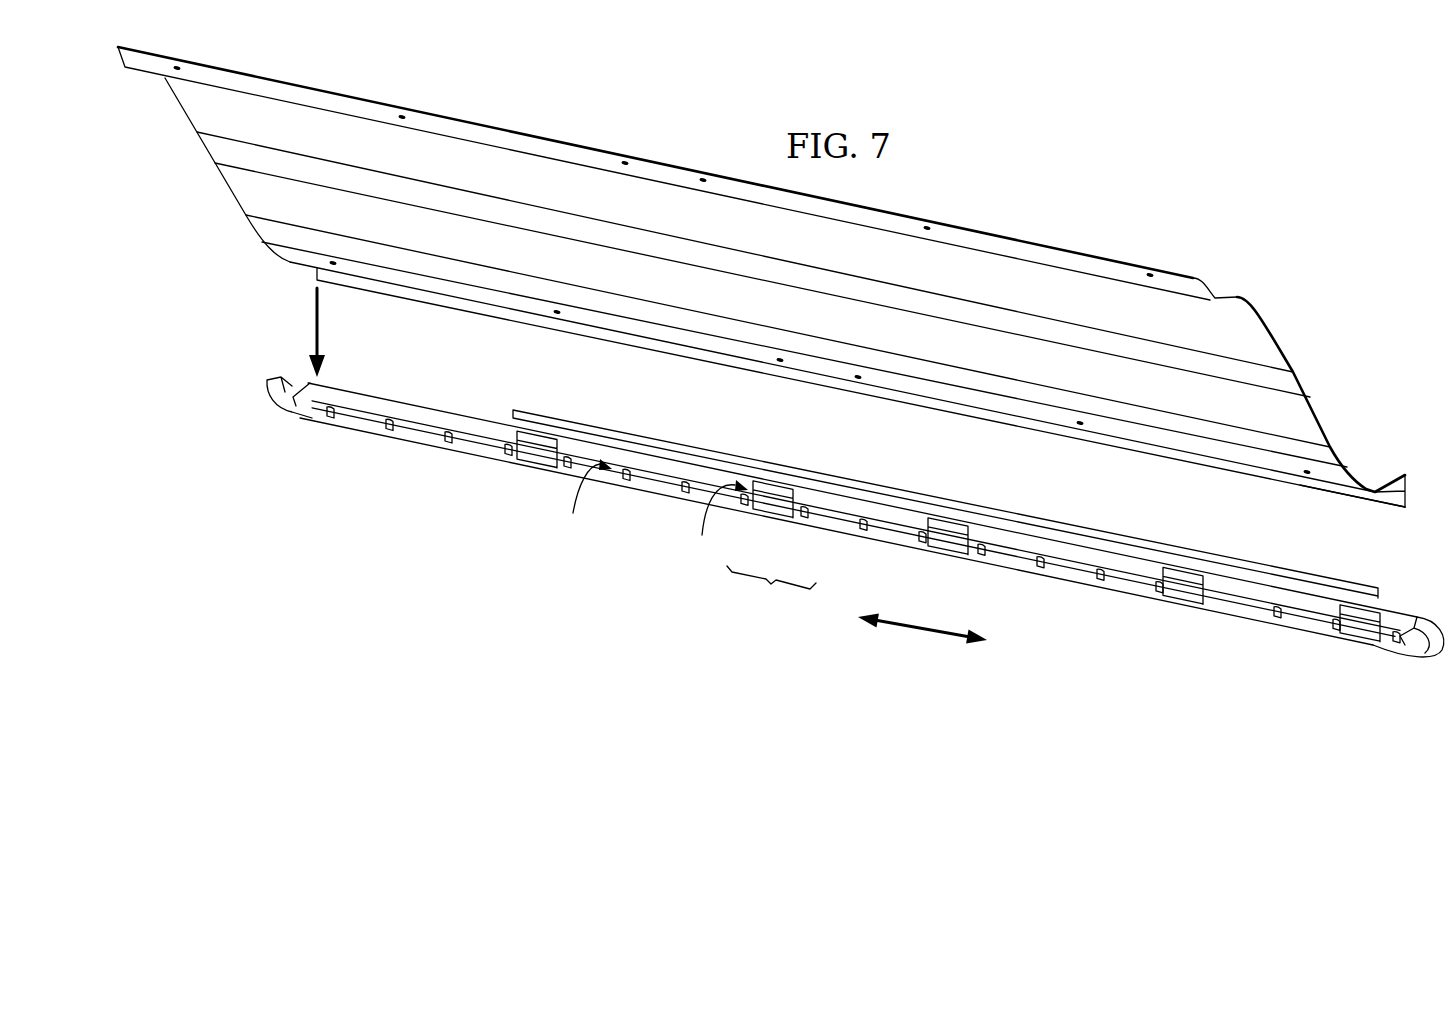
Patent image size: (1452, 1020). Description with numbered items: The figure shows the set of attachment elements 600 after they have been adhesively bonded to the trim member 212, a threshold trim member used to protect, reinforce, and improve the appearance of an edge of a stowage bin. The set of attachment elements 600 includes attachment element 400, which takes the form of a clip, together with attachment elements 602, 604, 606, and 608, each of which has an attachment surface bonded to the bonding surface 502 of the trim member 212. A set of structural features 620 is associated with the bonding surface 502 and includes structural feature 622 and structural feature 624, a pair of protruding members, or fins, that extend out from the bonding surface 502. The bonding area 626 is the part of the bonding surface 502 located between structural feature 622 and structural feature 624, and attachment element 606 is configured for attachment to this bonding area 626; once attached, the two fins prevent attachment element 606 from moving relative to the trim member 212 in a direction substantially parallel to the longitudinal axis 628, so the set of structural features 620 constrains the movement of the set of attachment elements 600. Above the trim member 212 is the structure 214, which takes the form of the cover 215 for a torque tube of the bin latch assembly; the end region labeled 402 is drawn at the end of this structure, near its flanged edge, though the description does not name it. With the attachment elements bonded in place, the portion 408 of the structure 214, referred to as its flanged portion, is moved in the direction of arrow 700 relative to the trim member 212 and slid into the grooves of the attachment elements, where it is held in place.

The arrow 700 is at (313, 333).
The cover 215 is at (1295, 368).
The structure 214 is at (1360, 467).
The flange end wall 402 is at (1407, 498).
The portion 408 is at (1387, 497).
The set of attachment elements 600 is at (958, 512).
The trim member 212 is at (1078, 590).
The bonding surface 502 is at (897, 520).
The attachment element 608 is at (522, 460).
The set of structural features 620 is at (579, 502).
The attachment element 606 is at (702, 516).
The structural feature 622 is at (753, 510).
The structural feature 624 is at (813, 520).
The bonding area 626 is at (771, 584).
The attachment element 604 is at (934, 550).
The attachment element 400 is at (1171, 597).
The attachment element 602 is at (1348, 635).
The longitudinal axis 628 is at (922, 630).